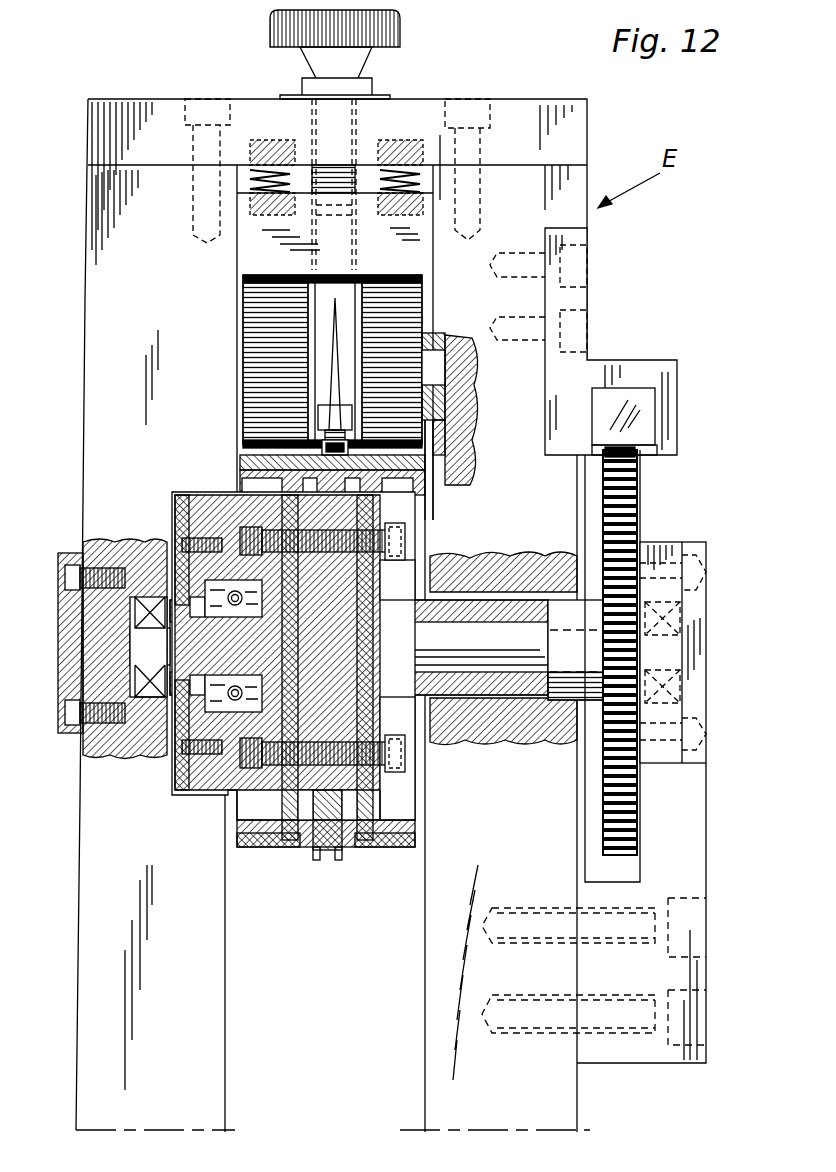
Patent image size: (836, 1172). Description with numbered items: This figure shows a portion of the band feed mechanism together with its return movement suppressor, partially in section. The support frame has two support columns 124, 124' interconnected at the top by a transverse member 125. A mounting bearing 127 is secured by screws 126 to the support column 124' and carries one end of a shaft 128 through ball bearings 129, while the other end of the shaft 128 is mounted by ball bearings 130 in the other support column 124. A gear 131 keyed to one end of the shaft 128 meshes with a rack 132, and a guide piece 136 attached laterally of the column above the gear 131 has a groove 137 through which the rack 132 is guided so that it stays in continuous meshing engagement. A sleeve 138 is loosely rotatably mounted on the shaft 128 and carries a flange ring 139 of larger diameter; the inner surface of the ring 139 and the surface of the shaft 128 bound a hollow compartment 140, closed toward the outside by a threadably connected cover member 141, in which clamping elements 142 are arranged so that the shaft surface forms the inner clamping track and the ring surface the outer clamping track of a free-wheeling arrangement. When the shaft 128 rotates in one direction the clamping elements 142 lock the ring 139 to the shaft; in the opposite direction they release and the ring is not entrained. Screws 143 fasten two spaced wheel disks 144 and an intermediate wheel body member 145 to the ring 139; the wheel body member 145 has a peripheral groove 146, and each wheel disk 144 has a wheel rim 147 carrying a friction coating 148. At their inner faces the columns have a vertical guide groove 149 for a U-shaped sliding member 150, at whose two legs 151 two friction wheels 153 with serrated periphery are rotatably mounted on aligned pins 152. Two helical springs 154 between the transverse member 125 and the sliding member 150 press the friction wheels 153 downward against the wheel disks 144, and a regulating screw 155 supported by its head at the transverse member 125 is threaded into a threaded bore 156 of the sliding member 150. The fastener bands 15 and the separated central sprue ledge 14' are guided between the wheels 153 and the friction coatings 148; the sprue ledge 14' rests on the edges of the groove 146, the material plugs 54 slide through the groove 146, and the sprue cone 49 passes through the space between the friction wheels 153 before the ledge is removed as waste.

The support column 124 is at (310, 615).
The support column 124' is at (423, 974).
The transverse member 125 is at (510, 115).
The screws 126 is at (618, 1012).
The mounting bearing 127 is at (688, 872).
The shaft 128 is at (500, 655).
The ball bearings 129 is at (665, 620).
The ball bearings 130 is at (150, 692).
The gear 131 is at (637, 510).
The rack 132 is at (648, 437).
The guide piece 136 is at (630, 360).
The groove 137 is at (592, 408).
The sleeve 138 is at (468, 600).
The flange ring 139 is at (262, 480).
The hollow compartment 140 is at (225, 258).
The cover member 141 is at (170, 500).
The clamping elements 142 is at (260, 617).
The screws 143 is at (432, 512).
The wheel disks 144 is at (250, 808).
The wheel body member 145 is at (347, 577).
The peripheral groove 146 is at (325, 860).
The wheel rim 147 is at (235, 828).
The friction coating 148 is at (266, 850).
The vertical guide groove 149 is at (440, 460).
The sliding member 150 is at (265, 236).
The legs 151 is at (445, 420).
The pins 152 is at (448, 345).
The friction wheels 153 is at (255, 302).
The helical springs 154 is at (268, 168).
The regulating screw 155 is at (398, 32).
The threaded bore 156 is at (355, 250).
The sprue cone 49 is at (335, 338).
The central sprue ledge 14' is at (259, 395).
The fastener bands 15 is at (335, 442).
The material plugs 54 is at (265, 455).